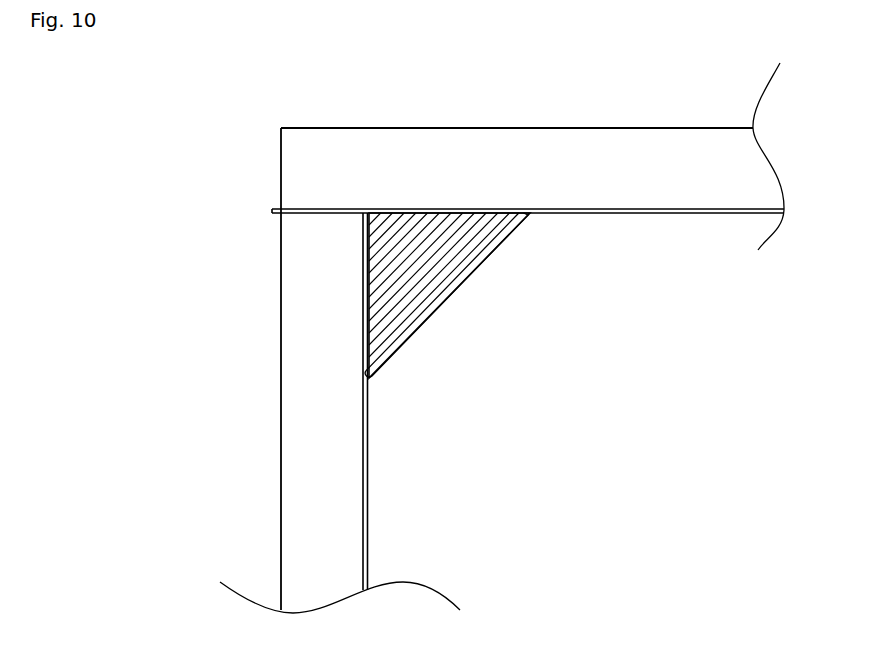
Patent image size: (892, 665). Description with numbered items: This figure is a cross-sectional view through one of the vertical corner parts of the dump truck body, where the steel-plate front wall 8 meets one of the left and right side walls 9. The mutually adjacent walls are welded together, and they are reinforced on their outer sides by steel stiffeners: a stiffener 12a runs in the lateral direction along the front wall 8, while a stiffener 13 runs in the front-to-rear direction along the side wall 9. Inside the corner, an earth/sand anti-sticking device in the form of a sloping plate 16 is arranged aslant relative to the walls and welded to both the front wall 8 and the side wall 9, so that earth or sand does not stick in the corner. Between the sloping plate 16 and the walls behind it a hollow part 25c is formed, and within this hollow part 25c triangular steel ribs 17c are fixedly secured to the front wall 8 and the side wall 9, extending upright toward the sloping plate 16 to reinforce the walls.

The stiffener 13 is at (440, 128).
The side wall 9 is at (615, 207).
The stiffener 12a is at (280, 468).
The front wall 8 is at (362, 412).
The sloping plate 16 is at (465, 285).
The rib 17c is at (410, 303).
The hollow part 25c is at (408, 258).